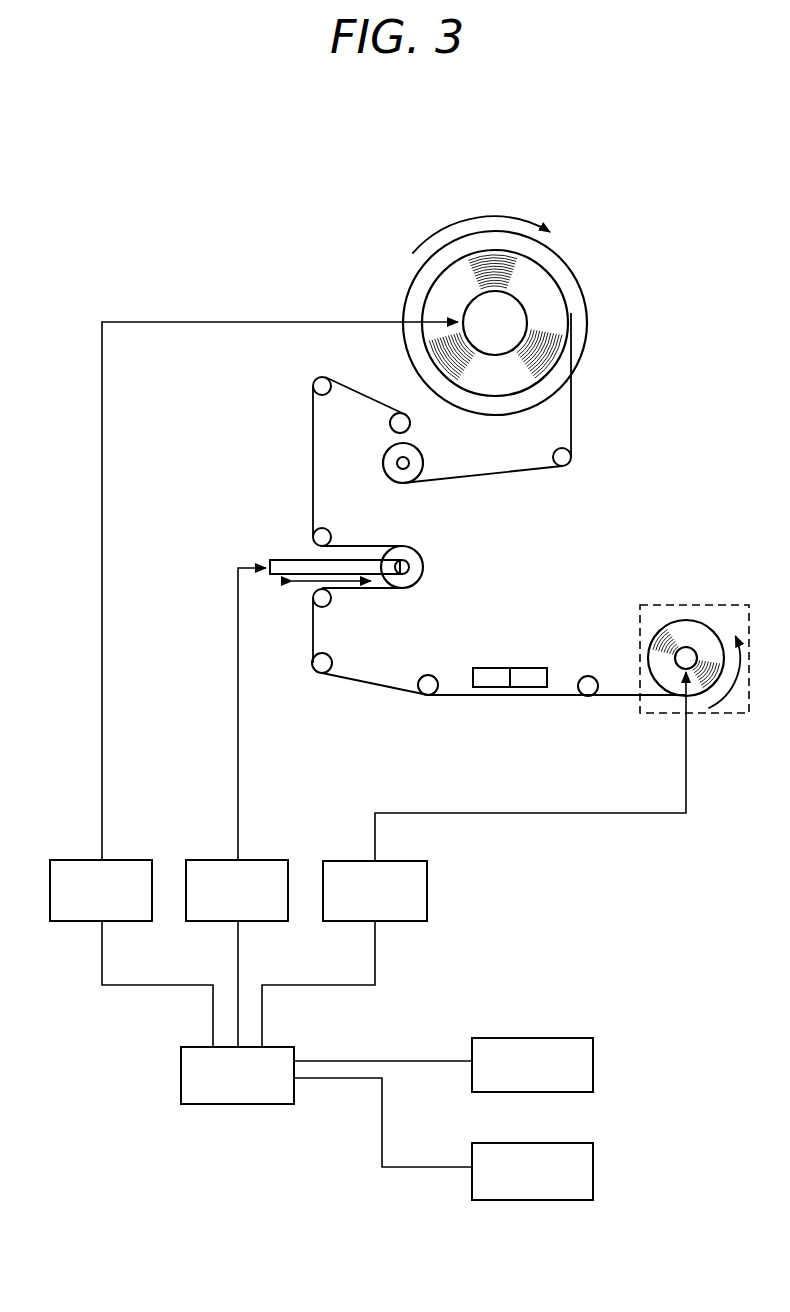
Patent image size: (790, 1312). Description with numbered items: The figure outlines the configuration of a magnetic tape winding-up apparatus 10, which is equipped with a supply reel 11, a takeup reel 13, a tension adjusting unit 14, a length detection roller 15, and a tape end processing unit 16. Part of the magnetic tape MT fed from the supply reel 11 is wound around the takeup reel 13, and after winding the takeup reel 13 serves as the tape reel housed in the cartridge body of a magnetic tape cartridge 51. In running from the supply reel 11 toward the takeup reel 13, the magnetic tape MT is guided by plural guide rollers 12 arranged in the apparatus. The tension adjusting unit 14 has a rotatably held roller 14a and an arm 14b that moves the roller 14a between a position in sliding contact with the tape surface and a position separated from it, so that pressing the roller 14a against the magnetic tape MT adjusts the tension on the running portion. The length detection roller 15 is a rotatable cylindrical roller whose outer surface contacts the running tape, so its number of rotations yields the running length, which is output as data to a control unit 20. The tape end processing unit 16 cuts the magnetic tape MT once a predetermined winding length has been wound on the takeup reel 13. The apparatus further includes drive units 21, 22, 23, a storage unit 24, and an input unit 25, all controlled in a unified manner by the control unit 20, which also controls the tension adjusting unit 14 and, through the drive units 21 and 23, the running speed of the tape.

The winding-up apparatus 10 is at (220, 258).
The supply reel 11 is at (403, 279).
The guide rollers 12 is at (325, 397).
The takeup reel 13 is at (698, 617).
The tension adjusting unit 14 is at (296, 552).
The roller 14a is at (415, 550).
The arm 14b is at (278, 560).
The length detection roller 15 is at (425, 462).
The tape end processing unit 16 is at (494, 664).
The control unit 20 is at (283, 1047).
The drive unit 21 is at (122, 860).
The drive unit 22 is at (270, 860).
The drive unit 23 is at (428, 878).
The storage unit 24 is at (593, 1052).
The input unit 25 is at (593, 1160).
The magnetic tape cartridge 51 is at (731, 714).
The magnetic tape MT is at (572, 403).